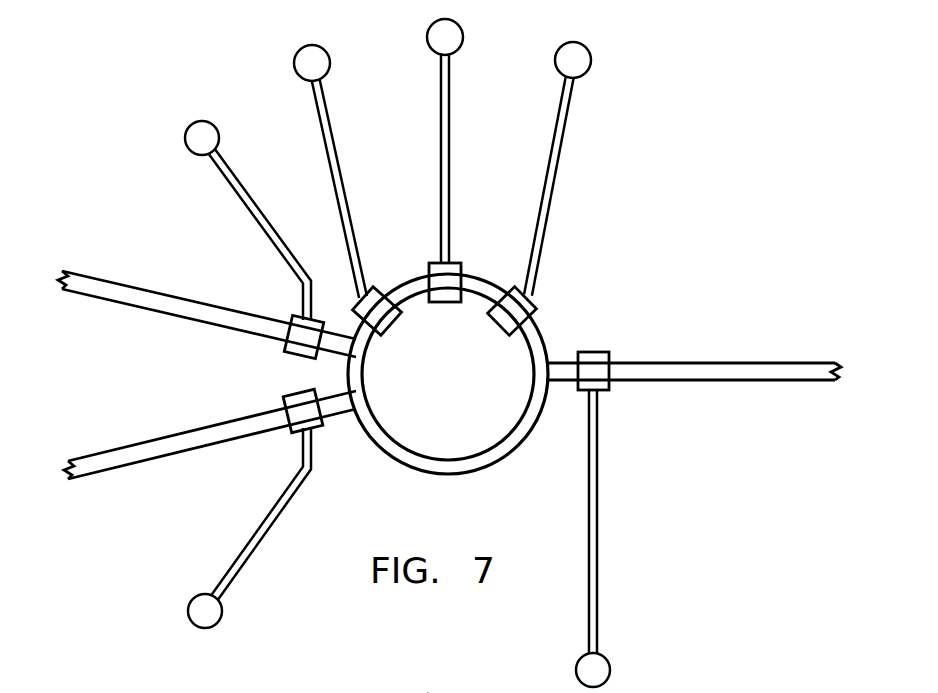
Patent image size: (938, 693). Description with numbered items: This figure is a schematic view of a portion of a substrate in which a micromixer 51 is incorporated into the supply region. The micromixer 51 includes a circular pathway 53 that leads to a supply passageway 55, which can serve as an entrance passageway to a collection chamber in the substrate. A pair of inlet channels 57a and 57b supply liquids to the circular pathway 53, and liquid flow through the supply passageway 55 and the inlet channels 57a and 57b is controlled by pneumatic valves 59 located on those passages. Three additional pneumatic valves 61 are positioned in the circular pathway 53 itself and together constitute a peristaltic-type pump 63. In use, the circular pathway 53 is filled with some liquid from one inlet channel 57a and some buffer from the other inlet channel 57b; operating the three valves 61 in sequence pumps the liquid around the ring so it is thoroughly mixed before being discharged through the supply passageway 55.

The micromixer 51 is at (623, 262).
The circular pathway 53 is at (448, 475).
The supply passageway 55 is at (720, 362).
The inlet channel 57a is at (175, 320).
The inlet channel 57b is at (175, 435).
The pneumatic valves 59 is at (290, 354).
The pneumatic valves 61 is at (493, 320).
The peristaltic-type pump 63 is at (468, 136).